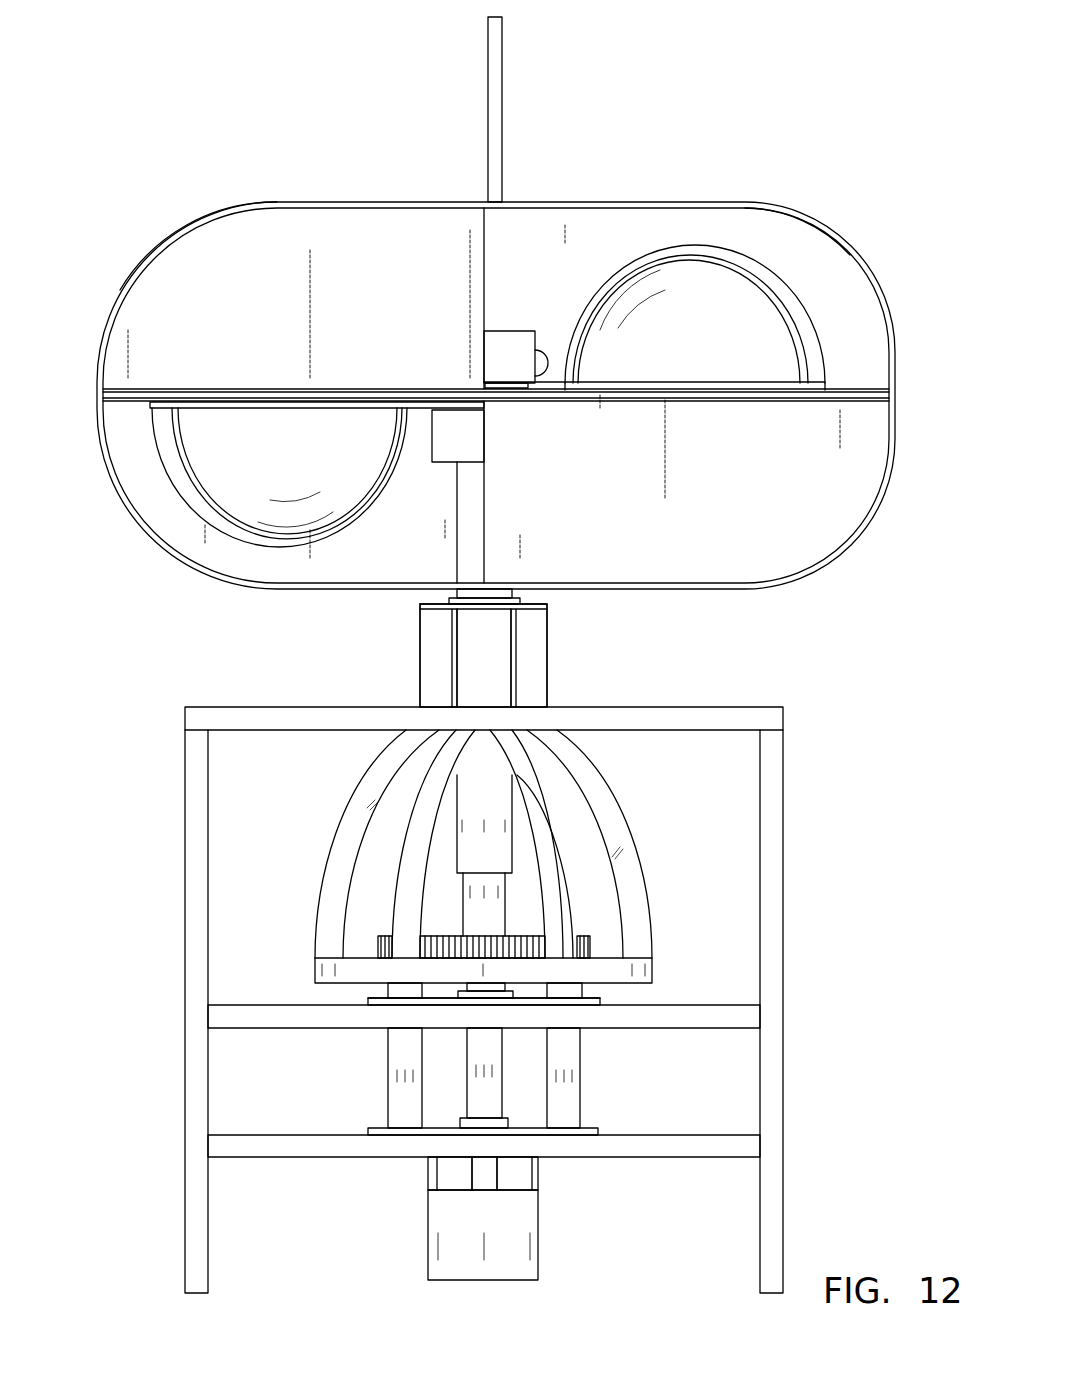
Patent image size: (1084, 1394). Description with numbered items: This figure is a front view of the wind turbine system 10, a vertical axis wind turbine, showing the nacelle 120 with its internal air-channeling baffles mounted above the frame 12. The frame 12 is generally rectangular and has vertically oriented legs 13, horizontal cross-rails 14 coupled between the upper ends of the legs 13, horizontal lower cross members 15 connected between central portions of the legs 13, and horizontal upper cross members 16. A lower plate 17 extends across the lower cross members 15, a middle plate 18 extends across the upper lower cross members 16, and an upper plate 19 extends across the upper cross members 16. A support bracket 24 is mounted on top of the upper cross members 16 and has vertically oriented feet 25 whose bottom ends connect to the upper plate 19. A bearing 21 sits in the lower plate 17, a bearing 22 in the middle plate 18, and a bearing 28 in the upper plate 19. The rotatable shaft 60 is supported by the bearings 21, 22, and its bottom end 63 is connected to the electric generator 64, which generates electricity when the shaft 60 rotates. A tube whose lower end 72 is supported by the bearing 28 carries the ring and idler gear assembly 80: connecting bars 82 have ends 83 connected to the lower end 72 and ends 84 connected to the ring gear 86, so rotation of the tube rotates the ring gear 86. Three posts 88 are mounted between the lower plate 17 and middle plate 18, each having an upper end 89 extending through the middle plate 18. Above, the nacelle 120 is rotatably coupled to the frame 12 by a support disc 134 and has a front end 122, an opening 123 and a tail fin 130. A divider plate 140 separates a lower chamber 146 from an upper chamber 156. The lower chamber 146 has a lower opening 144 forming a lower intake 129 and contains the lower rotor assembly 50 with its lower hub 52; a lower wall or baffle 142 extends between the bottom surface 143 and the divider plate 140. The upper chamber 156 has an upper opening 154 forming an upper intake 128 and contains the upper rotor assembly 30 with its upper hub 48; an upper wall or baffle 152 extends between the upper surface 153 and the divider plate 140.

The wind turbine system 10 is at (140, 76).
The frame 12 is at (170, 1070).
The legs 13 is at (90, 382).
The horizontal cross-rail 14 is at (125, 225).
The horizontal lower cross members 15 is at (720, 1018).
The horizontal upper cross members 16 is at (245, 730).
The lower plate 17 is at (597, 1130).
The middle plate 18 is at (597, 1000).
The upper plate 19 is at (382, 730).
The bearing 21 is at (467, 1118).
The bearing 22 is at (438, 1003).
The support bracket 24 is at (405, 613).
The feet 25 is at (435, 627).
The bearing 28 is at (487, 695).
The upper rotor assembly 30 is at (817, 315).
The upper hub 48 is at (515, 331).
The lower rotor assembly 50 is at (142, 428).
The lower hub 52 is at (432, 455).
The rotatable shaft 60 is at (487, 1168).
The bottom end 63 is at (470, 1168).
The electric generator 64 is at (428, 1243).
The lower end 72 is at (457, 852).
The ring and idler gear assembly 80 is at (548, 855).
The connecting bars 82 is at (620, 812).
The ends 83 is at (563, 738).
The ends 84 is at (658, 950).
The ring gear 86 is at (315, 975).
The posts 88 is at (388, 1083).
The upper end 89 is at (383, 990).
The nacelle 120 is at (444, 198).
The front end 122 is at (318, 250).
The opening 123 is at (725, 210).
The upper intake 128 is at (535, 228).
The lower intake 129 is at (154, 478).
The tail fin 130 is at (503, 32).
The support disc 134 is at (380, 688).
The divider plate 140 is at (720, 400).
The lower wall or baffle 142 is at (730, 528).
The bottom surface 143 is at (566, 582).
The lower opening 144 is at (175, 530).
The lower chamber 146 is at (250, 565).
The upper wall or baffle 152 is at (283, 203).
The upper surface 153 is at (397, 207).
The upper opening 154 is at (652, 231).
The upper chamber 156 is at (636, 232).